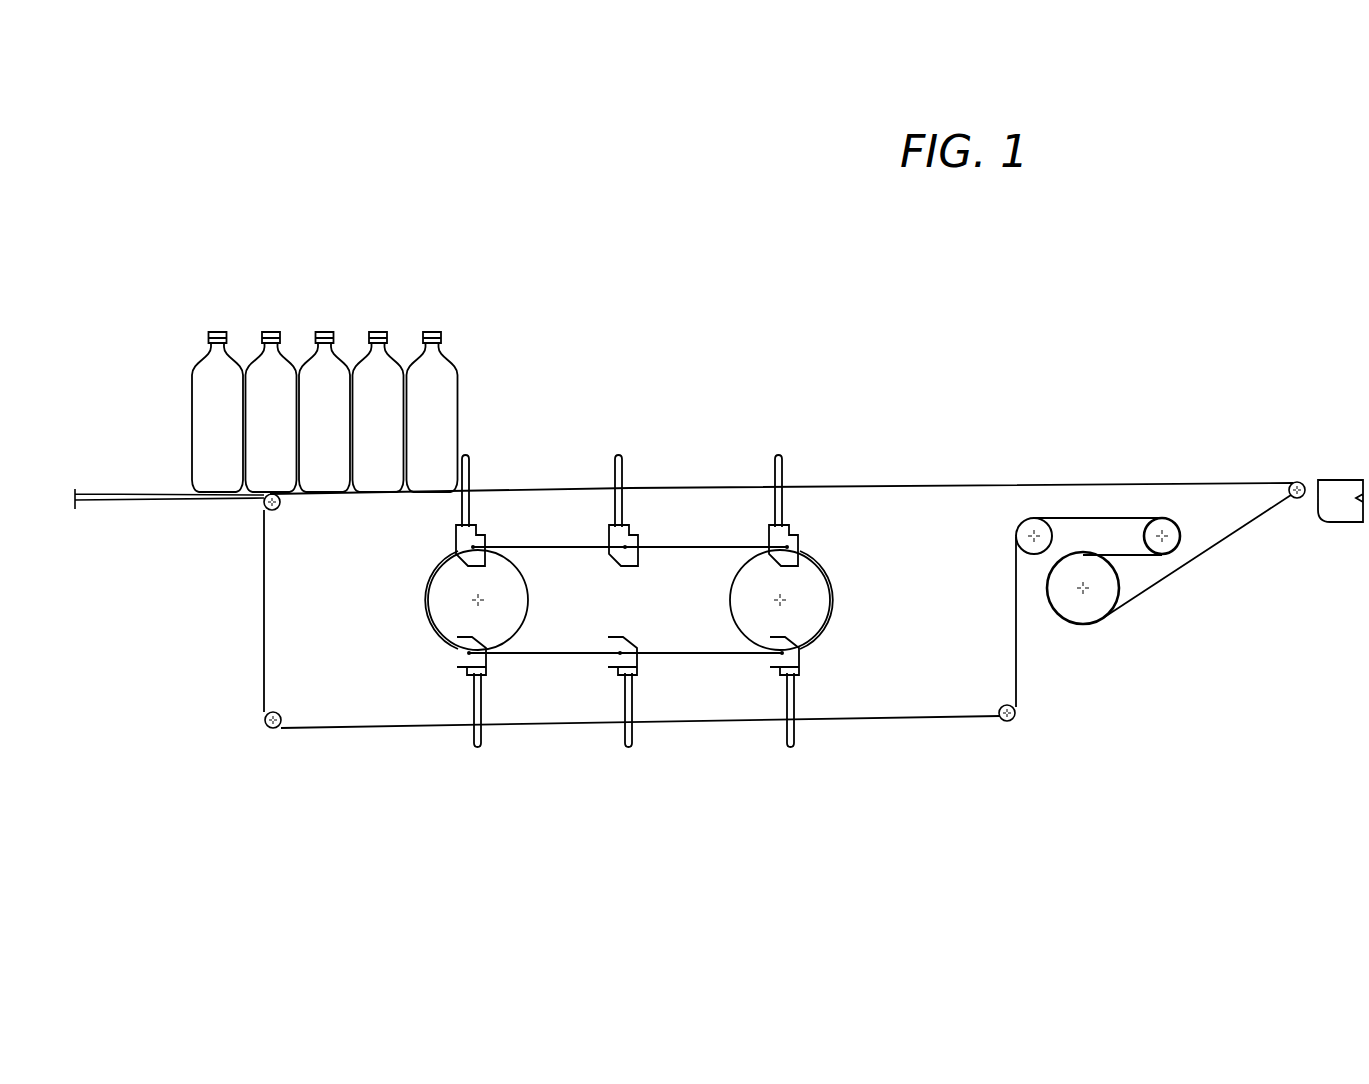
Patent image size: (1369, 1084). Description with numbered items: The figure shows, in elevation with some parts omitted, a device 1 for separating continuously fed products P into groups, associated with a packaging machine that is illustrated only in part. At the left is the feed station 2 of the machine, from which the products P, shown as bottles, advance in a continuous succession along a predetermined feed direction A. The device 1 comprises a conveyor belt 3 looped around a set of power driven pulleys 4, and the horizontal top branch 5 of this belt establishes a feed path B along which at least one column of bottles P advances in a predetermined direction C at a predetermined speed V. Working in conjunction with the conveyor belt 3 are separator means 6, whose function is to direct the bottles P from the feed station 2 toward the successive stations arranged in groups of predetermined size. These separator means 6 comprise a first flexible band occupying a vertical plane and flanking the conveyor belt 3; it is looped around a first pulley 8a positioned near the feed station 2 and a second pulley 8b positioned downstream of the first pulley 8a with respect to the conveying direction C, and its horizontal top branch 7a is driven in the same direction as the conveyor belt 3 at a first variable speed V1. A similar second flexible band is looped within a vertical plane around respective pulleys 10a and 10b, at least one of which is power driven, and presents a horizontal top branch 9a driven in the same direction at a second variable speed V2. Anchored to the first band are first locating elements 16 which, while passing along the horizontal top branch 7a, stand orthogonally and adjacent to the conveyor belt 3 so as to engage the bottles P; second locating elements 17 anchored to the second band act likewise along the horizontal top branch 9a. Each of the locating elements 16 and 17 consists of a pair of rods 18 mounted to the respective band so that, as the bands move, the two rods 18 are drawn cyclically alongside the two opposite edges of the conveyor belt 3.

The device 1 is at (750, 358).
The feed station 2 is at (110, 448).
The conveyor belt 3 is at (1078, 470).
The power driven pulleys 4 is at (272, 510).
The horizontal top branch 5 is at (1243, 482).
The separator means 6 is at (686, 675).
The horizontal top branch 7a is at (755, 483).
The horizontal top branch 9a is at (700, 545).
The first pulley 8a is at (433, 694).
The pulley 10a is at (448, 620).
The second pulley 8b is at (840, 676).
The pulley 10b is at (818, 615).
The first locating elements 16 is at (638, 473).
The second locating elements 17 is at (478, 473).
The rods 18 is at (464, 512).
The products P is at (272, 373).
The feed direction A is at (122, 480).
The feed path B is at (916, 388).
The direction C is at (530, 331).
The speed V is at (952, 470).
The first variable speed V1 is at (617, 455).
The second variable speed V2 is at (466, 456).